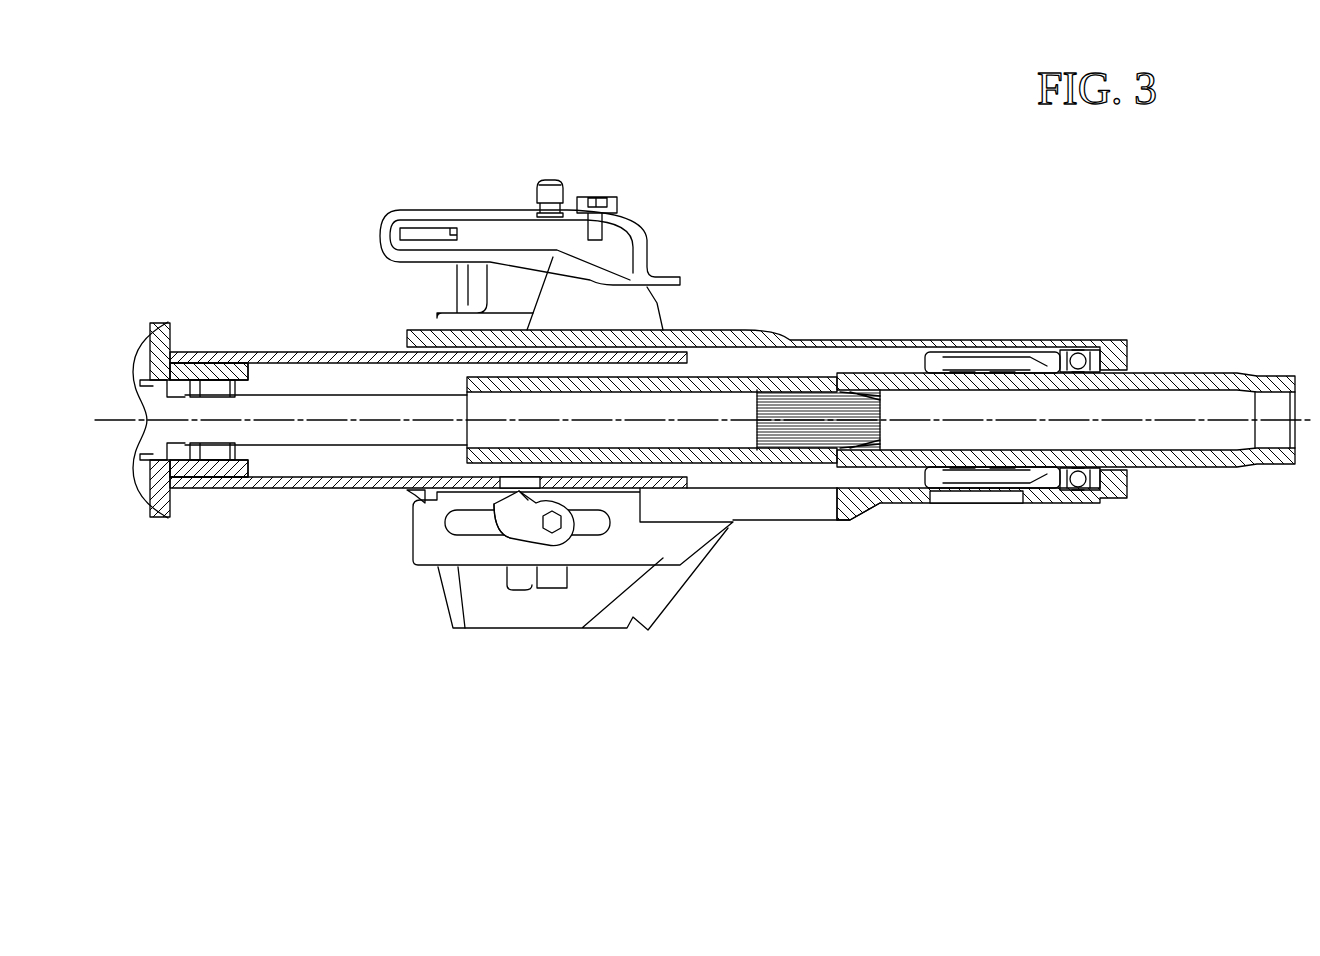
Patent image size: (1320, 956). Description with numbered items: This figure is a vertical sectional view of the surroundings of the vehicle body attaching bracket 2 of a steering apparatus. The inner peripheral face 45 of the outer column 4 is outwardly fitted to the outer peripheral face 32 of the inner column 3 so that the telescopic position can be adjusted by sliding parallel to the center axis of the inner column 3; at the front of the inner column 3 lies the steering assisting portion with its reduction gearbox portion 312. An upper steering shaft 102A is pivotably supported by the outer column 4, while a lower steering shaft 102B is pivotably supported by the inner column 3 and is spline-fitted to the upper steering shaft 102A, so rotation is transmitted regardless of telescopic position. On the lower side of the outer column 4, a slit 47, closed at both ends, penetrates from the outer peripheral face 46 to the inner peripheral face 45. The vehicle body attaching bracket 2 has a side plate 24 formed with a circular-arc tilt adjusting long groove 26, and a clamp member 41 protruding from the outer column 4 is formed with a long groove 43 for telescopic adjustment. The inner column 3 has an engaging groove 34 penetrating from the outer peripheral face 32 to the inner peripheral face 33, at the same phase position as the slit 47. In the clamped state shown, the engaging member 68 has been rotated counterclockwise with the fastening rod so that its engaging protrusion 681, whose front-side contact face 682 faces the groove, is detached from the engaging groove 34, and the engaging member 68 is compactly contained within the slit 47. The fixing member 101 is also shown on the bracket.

The vehicle body attaching bracket 2 is at (478, 199).
The inner column 3 is at (252, 351).
The outer column 4 is at (760, 338).
The side plate 24 is at (671, 600).
The tilt adjusting long groove 26 is at (530, 590).
The outer peripheral face 32 is at (309, 351).
The inner peripheral face 33 is at (303, 479).
The engaging groove 34 is at (506, 481).
The clamp member 41 is at (693, 545).
The long groove 43 is at (590, 532).
The inner peripheral face 45 is at (726, 357).
The outer peripheral face 46 is at (768, 525).
The slit 47 is at (836, 508).
The engaging member 68 is at (545, 537).
The fixing member 101 is at (606, 162).
The upper steering shaft 102A is at (1188, 366).
The lower steering shaft 102B is at (358, 408).
The reduction gearbox portion 312 is at (165, 328).
The engaging protrusion 681 is at (525, 506).
The contact face 682 is at (497, 522).